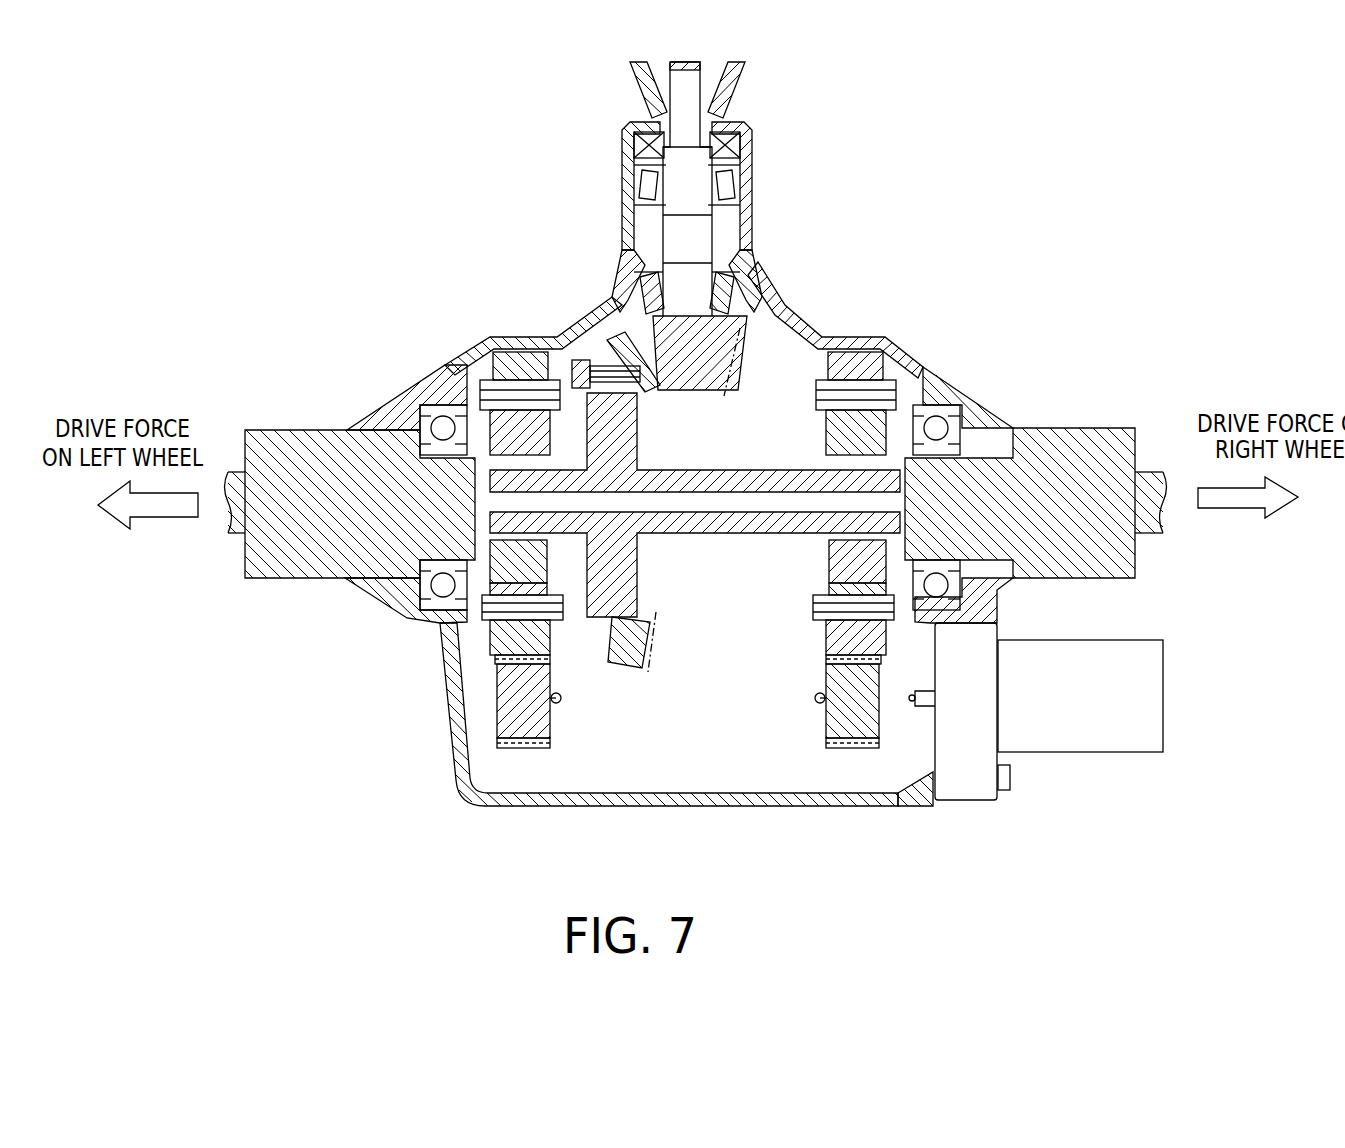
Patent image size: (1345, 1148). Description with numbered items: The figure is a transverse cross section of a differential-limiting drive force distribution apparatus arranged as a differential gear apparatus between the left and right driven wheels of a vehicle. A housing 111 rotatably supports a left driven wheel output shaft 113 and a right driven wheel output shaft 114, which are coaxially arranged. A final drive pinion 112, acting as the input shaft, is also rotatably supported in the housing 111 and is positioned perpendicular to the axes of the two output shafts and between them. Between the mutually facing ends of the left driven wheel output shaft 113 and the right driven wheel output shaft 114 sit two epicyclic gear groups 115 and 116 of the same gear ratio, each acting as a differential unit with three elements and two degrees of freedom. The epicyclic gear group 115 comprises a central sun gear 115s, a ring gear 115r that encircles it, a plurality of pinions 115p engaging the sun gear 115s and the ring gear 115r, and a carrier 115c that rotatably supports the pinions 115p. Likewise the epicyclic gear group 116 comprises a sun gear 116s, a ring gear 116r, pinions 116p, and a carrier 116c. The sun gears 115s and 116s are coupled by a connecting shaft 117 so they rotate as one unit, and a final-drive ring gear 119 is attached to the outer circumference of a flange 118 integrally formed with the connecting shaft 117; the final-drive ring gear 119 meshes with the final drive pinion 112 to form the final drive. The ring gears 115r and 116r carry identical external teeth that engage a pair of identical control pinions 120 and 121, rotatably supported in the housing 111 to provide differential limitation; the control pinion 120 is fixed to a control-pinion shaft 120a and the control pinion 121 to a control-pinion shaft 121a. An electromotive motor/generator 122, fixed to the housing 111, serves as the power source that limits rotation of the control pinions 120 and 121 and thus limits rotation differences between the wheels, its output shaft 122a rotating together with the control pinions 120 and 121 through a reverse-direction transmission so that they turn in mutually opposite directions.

The housing 111 is at (462, 372).
The final drive pinion 112 is at (690, 392).
The left driven wheel output shaft 113 is at (298, 500).
The right driven wheel output shaft 114 is at (1072, 500).
The epicyclic gear group 115 is at (508, 345).
The sun gear 115s is at (513, 558).
The carrier 115c is at (497, 617).
The pinions 115p is at (500, 647).
The ring gear 115r is at (497, 656).
The epicyclic gear group 116 is at (858, 345).
The sun gear 116s is at (905, 610).
The carrier 116c is at (893, 617).
The pinions 116p is at (893, 628).
The ring gear 116r is at (893, 650).
The connecting shaft 117 is at (737, 535).
The flange 118 is at (640, 588).
The final-drive ring gear 119 is at (607, 345).
The control pinion 120 is at (556, 748).
The control-pinion shaft 120a is at (562, 700).
The control pinion 121 is at (853, 750).
The control-pinion shaft 121a is at (818, 700).
The electromotive motor/generator 122 is at (1085, 752).
The output shaft 122a is at (920, 706).